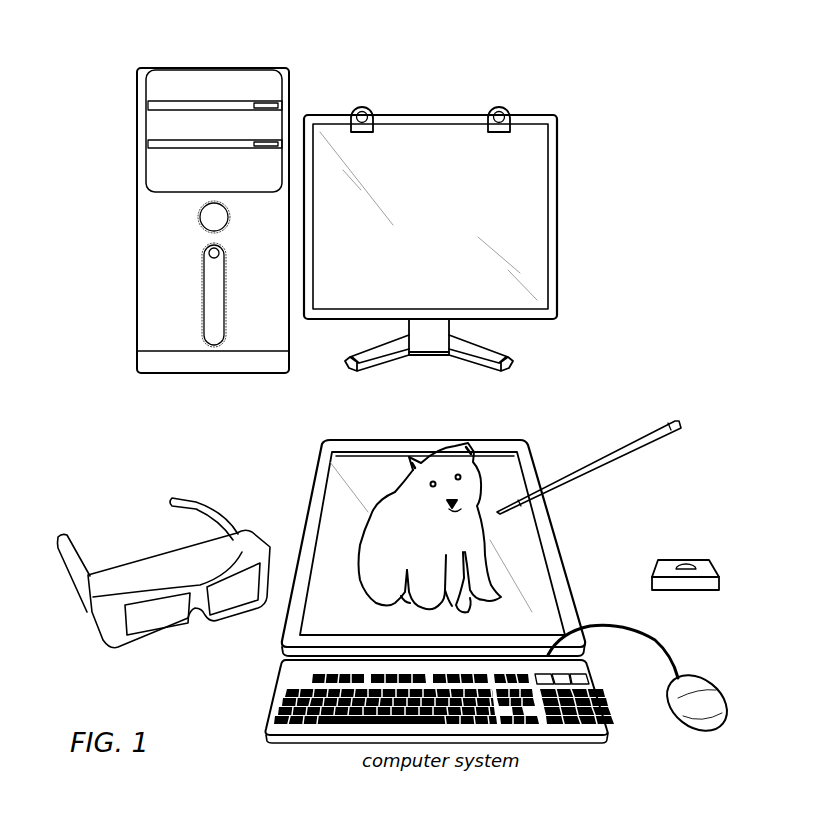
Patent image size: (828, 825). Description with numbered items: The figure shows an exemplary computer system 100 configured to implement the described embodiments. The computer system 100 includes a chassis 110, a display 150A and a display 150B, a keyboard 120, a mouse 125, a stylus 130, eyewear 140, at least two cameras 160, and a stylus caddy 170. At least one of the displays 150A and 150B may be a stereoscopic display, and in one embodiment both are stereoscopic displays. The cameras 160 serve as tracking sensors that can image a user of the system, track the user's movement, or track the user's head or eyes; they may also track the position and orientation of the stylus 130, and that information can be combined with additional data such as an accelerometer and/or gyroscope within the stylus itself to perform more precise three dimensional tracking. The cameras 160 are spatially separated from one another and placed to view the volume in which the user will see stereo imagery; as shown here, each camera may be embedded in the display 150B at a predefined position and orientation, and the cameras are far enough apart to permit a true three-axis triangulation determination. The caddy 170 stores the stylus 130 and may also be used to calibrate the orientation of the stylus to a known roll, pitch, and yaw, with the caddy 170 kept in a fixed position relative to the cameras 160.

The computer system 100 is at (495, 36).
The chassis 110 is at (179, 67).
The keyboard 120 is at (563, 740).
The mouse 125 is at (710, 732).
The stylus 130 is at (677, 425).
The eyewear 140 is at (115, 487).
The display 150A is at (540, 104).
The display 150B is at (560, 548).
The cameras 160 is at (490, 113).
The stylus caddy 170 is at (689, 557).